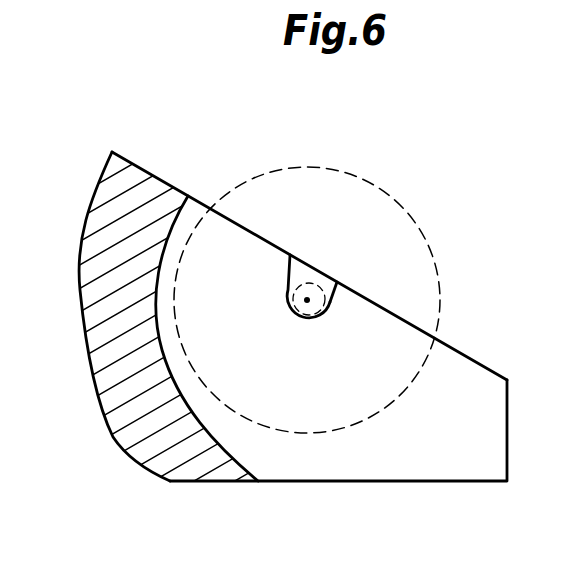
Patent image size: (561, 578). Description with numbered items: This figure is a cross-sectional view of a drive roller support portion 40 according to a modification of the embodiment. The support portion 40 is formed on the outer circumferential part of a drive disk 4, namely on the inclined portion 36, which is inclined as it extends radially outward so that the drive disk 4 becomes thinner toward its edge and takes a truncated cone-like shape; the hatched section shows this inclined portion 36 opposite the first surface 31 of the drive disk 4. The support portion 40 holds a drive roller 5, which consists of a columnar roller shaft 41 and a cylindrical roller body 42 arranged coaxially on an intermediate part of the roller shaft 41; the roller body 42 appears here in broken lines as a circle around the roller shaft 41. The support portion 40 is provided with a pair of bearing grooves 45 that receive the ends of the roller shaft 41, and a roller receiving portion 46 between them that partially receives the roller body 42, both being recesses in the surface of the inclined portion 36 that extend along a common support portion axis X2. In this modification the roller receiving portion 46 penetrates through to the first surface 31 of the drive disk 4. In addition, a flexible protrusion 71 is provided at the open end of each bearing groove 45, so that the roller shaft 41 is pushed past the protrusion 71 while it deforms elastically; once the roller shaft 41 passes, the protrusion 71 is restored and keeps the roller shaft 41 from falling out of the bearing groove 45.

The drive disk 4 is at (98, 413).
The drive roller 5 is at (336, 261).
The first surface 31 is at (313, 482).
The inclined portion 36 is at (163, 180).
The drive roller support portion 40 is at (205, 203).
The roller shaft 41 is at (307, 300).
The roller body 42 is at (413, 219).
The bearing groove 45 is at (320, 321).
The roller receiving portion 46 is at (186, 383).
The flexible protrusion 71 is at (337, 293).
The support portion axis X2 is at (325, 297).